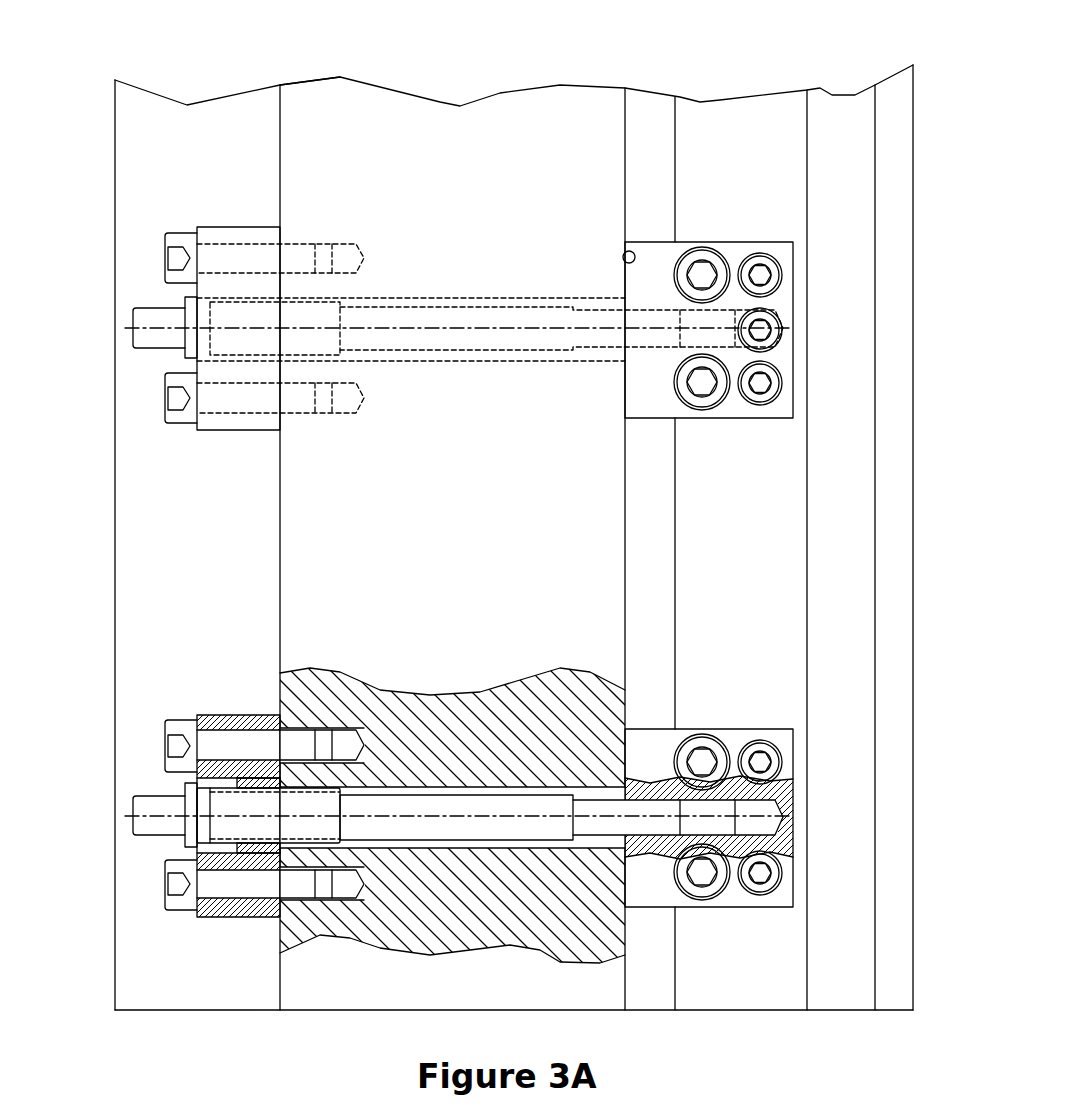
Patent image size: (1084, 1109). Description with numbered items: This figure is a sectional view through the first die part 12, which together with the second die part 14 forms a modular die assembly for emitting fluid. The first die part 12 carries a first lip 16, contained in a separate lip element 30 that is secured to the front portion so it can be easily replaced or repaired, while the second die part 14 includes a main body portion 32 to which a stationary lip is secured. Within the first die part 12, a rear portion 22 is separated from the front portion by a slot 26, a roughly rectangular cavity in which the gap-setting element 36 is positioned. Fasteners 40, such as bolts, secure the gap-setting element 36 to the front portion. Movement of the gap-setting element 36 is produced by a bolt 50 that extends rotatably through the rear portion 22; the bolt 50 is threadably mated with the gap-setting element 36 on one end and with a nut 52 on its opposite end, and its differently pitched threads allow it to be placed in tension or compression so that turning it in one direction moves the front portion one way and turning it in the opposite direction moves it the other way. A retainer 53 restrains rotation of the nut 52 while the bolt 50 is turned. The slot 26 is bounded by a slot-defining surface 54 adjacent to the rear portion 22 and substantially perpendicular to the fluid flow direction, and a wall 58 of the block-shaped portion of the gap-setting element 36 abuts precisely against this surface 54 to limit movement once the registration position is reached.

The first die part 12 is at (346, 122).
The second die part 14 is at (142, 156).
The first lip 16 is at (913, 215).
The rear portion 22 is at (512, 132).
The slot 26 is at (655, 123).
The lip element 30 is at (887, 180).
The main body portion 32 is at (152, 118).
The gap-setting element 36 is at (657, 383).
The fasteners 40 is at (758, 278).
The bolt 50 is at (153, 333).
The nut 52 is at (222, 237).
The retainer 53 is at (248, 783).
The slot-defining surface 54 is at (632, 112).
The wall 58 is at (623, 255).